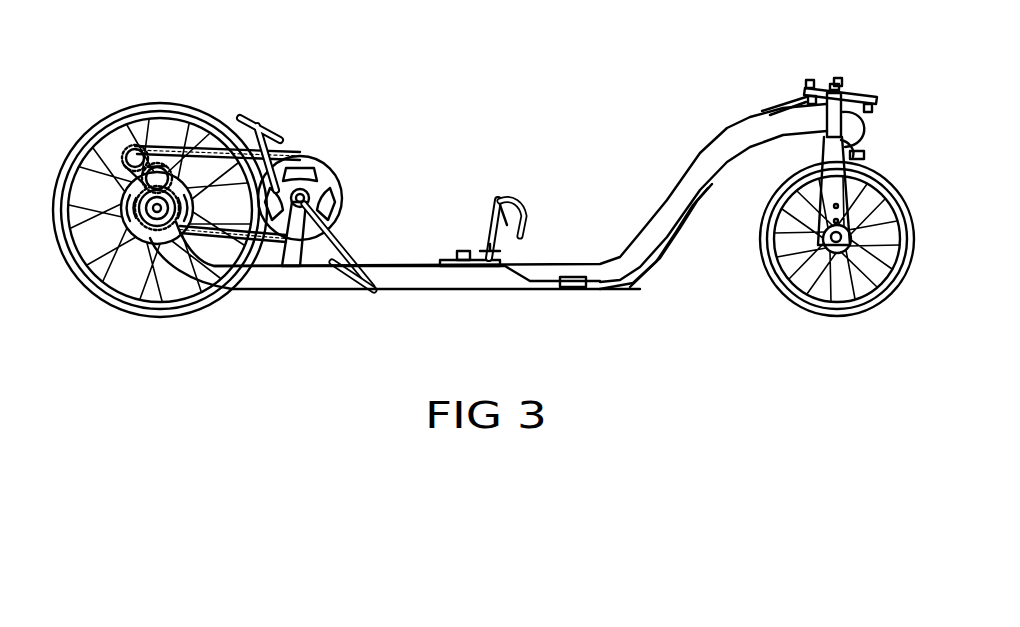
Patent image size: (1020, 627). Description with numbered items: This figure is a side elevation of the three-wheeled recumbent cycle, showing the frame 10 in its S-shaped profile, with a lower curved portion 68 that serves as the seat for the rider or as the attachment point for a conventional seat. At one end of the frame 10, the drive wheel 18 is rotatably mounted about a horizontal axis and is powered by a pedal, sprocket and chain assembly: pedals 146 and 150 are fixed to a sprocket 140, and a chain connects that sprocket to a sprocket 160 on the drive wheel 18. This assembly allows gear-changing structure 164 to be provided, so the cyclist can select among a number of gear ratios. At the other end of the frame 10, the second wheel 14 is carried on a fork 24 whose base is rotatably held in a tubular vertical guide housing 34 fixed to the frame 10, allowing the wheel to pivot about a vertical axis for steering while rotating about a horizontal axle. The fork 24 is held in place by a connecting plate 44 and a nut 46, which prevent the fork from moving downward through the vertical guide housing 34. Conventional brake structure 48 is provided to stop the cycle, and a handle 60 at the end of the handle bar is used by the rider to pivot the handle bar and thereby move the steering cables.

The frame 10 is at (516, 289).
The second wheel 14 is at (778, 290).
The drive wheel 18 is at (186, 105).
The fork 24 is at (780, 208).
The vertical guide housing 34 is at (846, 130).
The connecting plate 44 is at (806, 91).
The nut 46 is at (834, 85).
The brake structure 48 is at (865, 160).
The handle 60 is at (497, 203).
The lower curved portion 68 is at (615, 257).
The sprocket 140 is at (322, 167).
The pedal 146 is at (255, 118).
The pedal 150 is at (362, 290).
The sprocket 160 is at (132, 230).
The gear-changing structure 164 is at (152, 150).